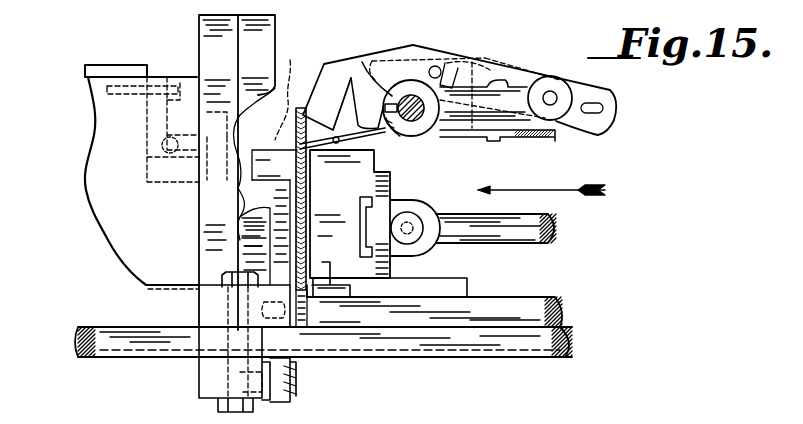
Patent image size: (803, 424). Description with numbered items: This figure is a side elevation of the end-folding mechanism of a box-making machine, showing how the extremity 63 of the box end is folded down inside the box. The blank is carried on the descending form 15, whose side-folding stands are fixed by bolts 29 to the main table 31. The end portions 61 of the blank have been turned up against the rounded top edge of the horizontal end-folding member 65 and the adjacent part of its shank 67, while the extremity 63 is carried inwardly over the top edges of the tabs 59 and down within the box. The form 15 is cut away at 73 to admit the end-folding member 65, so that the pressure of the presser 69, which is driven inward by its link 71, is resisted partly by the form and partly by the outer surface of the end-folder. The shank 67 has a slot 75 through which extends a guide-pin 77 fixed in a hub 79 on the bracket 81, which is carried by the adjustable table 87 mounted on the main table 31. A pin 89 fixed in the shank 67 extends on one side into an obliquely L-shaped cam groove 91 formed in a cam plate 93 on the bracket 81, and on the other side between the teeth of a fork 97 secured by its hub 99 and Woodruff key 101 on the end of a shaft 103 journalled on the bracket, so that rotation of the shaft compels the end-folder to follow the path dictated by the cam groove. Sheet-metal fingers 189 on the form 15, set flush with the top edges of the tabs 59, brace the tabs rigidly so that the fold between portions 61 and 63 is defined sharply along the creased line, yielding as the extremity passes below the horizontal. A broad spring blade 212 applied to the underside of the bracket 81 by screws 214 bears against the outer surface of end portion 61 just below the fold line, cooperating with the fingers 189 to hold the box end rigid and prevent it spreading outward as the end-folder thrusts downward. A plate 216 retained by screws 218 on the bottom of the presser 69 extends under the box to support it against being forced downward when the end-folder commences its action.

The form 15 is at (86, 148).
The bolts 29 is at (222, 278).
The main table 31 is at (467, 343).
The tabs 59 is at (290, 196).
The portions of the blank 61 is at (305, 178).
The extremity of the end 63 is at (290, 66).
The end-folding member 65 is at (307, 68).
The shank 67 is at (362, 62).
The presser 69 is at (350, 214).
The link 71 is at (482, 235).
The cut-away 73 is at (297, 176).
The slot 75 is at (605, 109).
The guide-pin 77 is at (551, 92).
The hub 79 is at (537, 80).
The bracket 81 is at (558, 140).
The adjustable table 87 is at (532, 297).
The pin 89 is at (442, 70).
The cam groove 91 is at (370, 90).
The cam plate 93 is at (473, 72).
The fork 97 is at (436, 66).
The hub 99 is at (430, 134).
The Woodruff key 101 is at (401, 104).
The shaft 103 is at (399, 136).
The fingers 189 is at (274, 155).
The spring blade 212 is at (336, 143).
The screws 214 is at (495, 141).
The plate 216 is at (262, 290).
The screws 218 is at (345, 247).